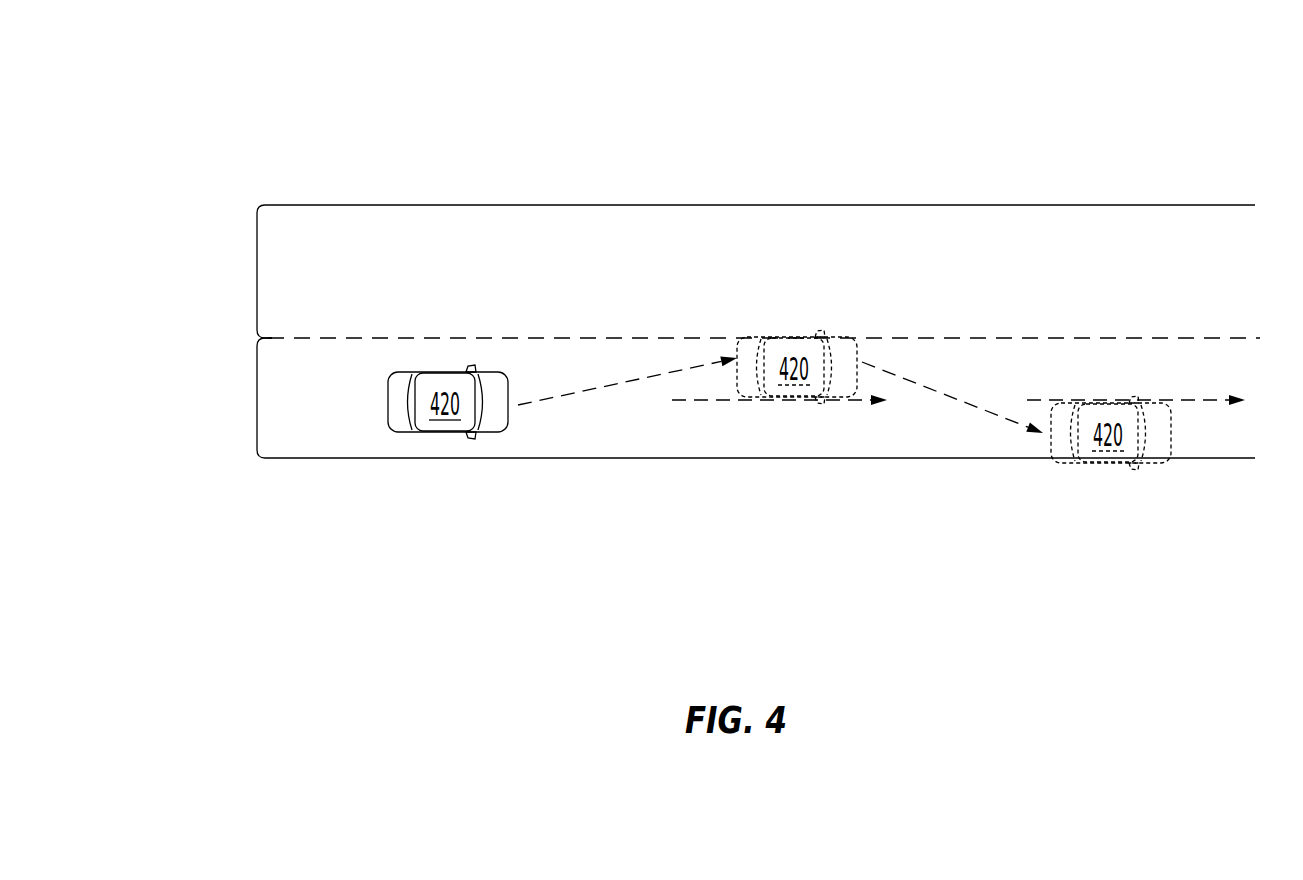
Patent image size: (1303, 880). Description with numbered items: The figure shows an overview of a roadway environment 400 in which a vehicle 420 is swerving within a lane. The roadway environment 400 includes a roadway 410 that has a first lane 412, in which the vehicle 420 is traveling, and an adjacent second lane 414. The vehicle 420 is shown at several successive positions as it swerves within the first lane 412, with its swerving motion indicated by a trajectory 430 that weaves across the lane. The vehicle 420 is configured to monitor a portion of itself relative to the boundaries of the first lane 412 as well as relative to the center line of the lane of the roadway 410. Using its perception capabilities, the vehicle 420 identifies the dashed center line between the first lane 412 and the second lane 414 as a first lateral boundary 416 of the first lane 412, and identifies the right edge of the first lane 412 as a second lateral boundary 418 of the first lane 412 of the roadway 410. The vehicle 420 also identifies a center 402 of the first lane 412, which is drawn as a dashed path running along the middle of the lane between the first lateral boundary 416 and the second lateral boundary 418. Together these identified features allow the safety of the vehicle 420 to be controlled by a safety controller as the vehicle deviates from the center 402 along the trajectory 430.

The roadway environment 400 is at (400, 105).
The center of the first lane 402 is at (692, 400).
The roadway 410 is at (200, 197).
The first lane 412 is at (727, 425).
The second lane 414 is at (257, 272).
The first lateral boundary 416 is at (1260, 339).
The second lateral boundary 418 is at (635, 458).
The vehicle 420 is at (779, 400).
The trajectory 430 is at (592, 388).